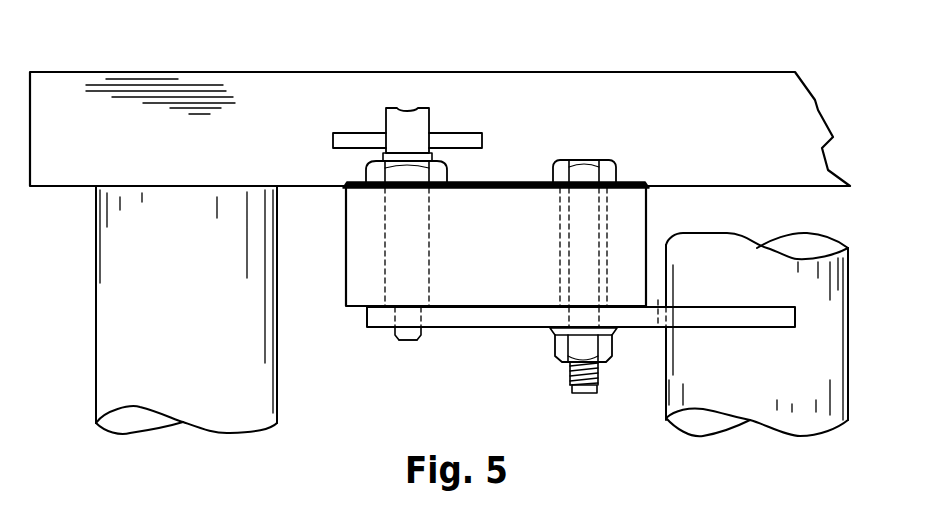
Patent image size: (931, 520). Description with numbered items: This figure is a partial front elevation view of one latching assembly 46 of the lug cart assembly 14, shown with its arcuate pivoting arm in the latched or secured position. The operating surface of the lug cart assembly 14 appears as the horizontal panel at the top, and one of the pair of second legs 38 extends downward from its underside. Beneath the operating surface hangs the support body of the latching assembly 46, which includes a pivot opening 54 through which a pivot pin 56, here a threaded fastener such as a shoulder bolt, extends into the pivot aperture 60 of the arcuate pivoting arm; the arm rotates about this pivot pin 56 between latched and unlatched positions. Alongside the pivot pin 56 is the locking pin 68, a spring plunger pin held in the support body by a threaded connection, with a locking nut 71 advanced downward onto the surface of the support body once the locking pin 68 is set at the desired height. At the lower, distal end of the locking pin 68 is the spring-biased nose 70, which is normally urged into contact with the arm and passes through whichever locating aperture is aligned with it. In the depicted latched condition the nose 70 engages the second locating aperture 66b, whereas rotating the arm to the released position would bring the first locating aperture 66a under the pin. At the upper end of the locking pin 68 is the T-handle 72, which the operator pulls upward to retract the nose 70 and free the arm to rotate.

The lug cart assembly 14 is at (755, 72).
The second legs 38 is at (96, 323).
The latching assembly 46 is at (620, 138).
The pivot opening 54 is at (610, 220).
The pivot pin 56 is at (584, 160).
The pivot aperture 60 is at (598, 313).
The first locating aperture 66a is at (688, 320).
The second locating aperture 66b is at (395, 313).
The locking pin 68 is at (430, 110).
The nose 70 is at (421, 330).
The locking nut 71 is at (440, 170).
The T-handle 72 is at (473, 133).